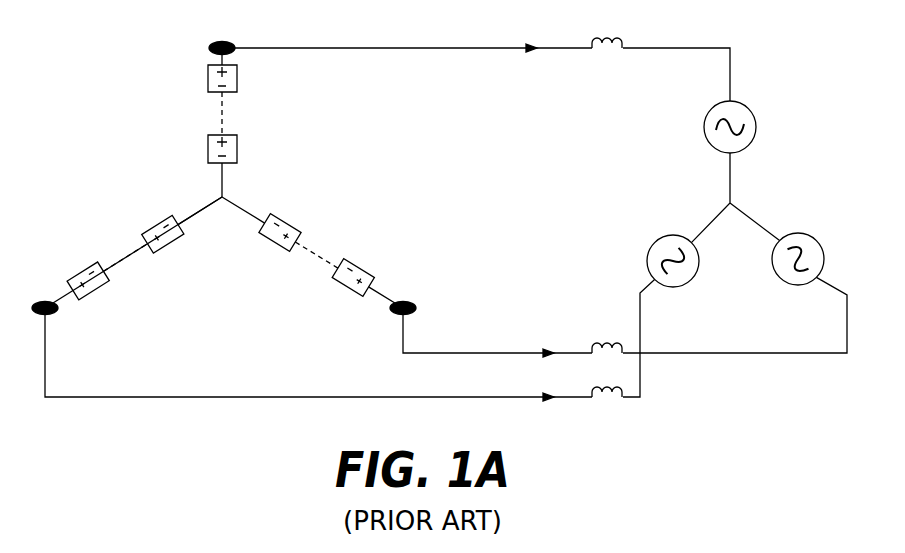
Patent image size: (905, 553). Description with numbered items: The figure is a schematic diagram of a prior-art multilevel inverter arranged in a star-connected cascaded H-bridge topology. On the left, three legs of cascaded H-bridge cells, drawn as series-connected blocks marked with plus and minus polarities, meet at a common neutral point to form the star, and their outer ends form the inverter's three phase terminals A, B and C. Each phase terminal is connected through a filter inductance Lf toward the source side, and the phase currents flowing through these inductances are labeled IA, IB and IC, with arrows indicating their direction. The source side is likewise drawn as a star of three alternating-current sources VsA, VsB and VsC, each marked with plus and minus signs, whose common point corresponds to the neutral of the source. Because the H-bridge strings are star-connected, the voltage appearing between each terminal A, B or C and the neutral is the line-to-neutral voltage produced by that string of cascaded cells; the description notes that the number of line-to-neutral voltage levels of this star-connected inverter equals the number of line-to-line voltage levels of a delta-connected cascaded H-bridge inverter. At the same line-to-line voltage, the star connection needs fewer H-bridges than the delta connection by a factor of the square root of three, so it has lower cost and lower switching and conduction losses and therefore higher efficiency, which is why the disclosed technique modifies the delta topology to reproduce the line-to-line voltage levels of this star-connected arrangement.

The phase A terminal A is at (222, 36).
The phase B terminal B is at (45, 294).
The phase C terminal C is at (403, 295).
The phase A current IA is at (527, 34).
The phase B current IB is at (536, 384).
The phase C current IC is at (541, 339).
The filter inductor Lf is at (607, 206).
The phase A source voltage VsA is at (766, 98).
The phase B source voltage VsB is at (668, 225).
The phase C source voltage VsC is at (832, 258).